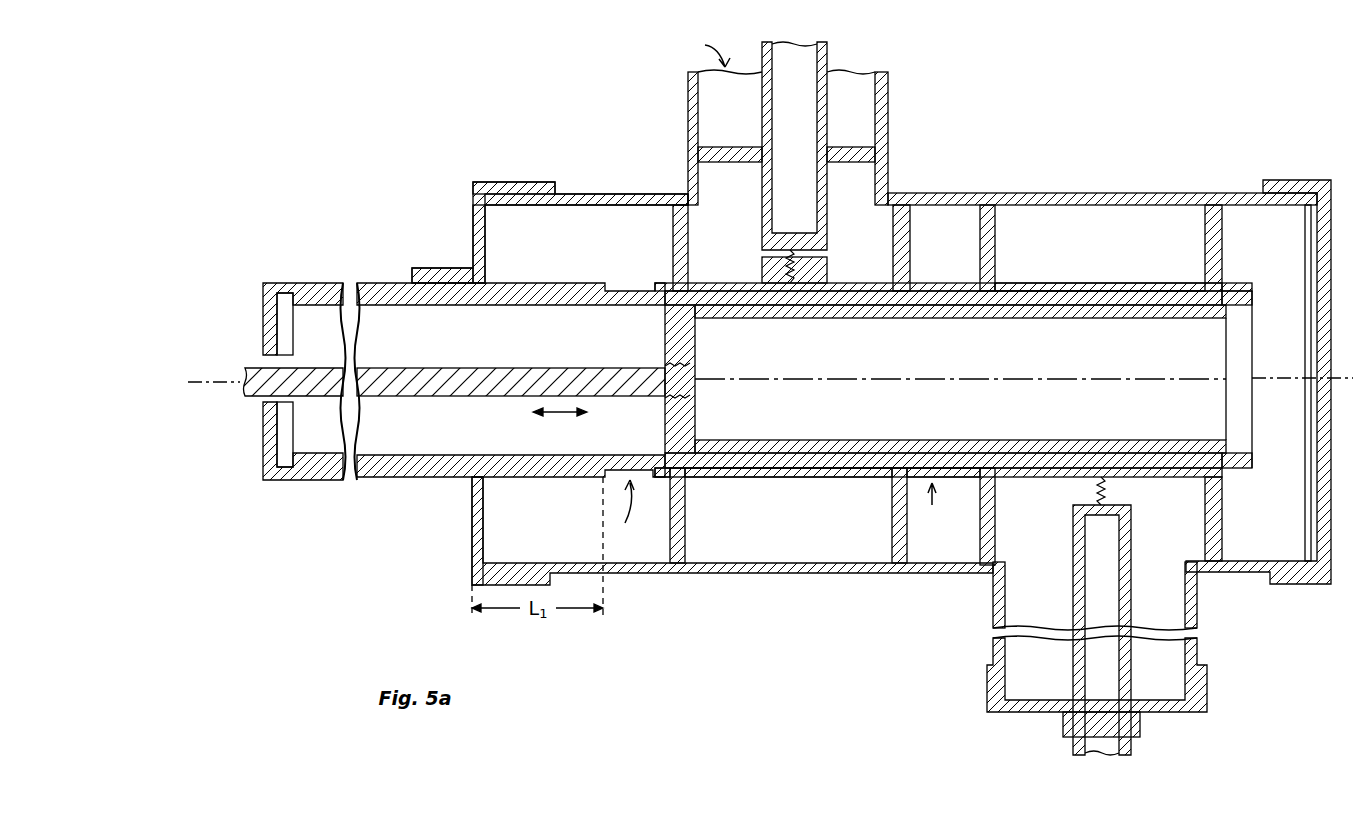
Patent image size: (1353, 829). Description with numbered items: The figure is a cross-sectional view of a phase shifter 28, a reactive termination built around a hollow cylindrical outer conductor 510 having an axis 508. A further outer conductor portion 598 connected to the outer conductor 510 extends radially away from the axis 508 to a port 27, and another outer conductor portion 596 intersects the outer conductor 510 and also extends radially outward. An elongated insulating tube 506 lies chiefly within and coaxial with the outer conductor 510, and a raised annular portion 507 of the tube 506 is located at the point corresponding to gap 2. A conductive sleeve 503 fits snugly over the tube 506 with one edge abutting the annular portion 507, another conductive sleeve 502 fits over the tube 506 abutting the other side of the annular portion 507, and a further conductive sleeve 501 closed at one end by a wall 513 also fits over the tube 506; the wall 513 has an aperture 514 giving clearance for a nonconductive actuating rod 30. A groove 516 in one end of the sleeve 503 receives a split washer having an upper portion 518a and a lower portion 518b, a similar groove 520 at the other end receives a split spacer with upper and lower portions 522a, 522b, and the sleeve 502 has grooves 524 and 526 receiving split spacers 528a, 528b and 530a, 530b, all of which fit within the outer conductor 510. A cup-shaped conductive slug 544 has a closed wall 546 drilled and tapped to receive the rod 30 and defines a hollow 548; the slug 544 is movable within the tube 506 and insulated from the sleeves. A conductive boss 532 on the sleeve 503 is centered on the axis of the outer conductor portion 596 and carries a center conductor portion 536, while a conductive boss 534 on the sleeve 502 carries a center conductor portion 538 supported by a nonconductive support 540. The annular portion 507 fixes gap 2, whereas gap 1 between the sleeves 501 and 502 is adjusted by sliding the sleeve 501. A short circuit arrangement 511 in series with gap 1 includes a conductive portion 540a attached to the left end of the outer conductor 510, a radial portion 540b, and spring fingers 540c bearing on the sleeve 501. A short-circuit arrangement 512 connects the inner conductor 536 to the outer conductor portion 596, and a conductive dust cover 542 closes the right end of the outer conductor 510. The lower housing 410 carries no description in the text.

The gap 1 is at (630, 505).
The gap 2 is at (937, 507).
The port 27 is at (706, 50).
The phase shifter 28 is at (608, 638).
The actuating rod 30 is at (503, 368).
The lower housing 410 is at (760, 575).
The conductive sleeve 501 is at (385, 283).
The conductive sleeve 502 is at (848, 284).
The conductive sleeve 503 is at (1152, 282).
The tube 506 is at (586, 305).
The raised annular portion 507 is at (943, 479).
The axis 508 is at (205, 382).
The outer conductor 510 is at (650, 194).
The short circuit arrangement 511 is at (473, 207).
The short-circuit arrangement 512 is at (1000, 712).
The wall 513 is at (263, 453).
The aperture 514 is at (262, 400).
The groove 516 is at (1226, 282).
The upper portion of washer 518a is at (1222, 237).
The lower portion of washer 518b is at (1222, 525).
The groove 520 is at (997, 283).
The upper portion of split spacer 522a is at (995, 218).
The lower portion of split spacer 522b is at (995, 522).
The groove 524 is at (892, 478).
The groove 526 is at (690, 479).
The split spacer 528a is at (910, 245).
The split spacer 528b is at (892, 537).
The split spacer 530a is at (688, 232).
The split spacer 530b is at (685, 529).
The conductive boss 532 is at (1091, 484).
The conductive boss 534 is at (833, 265).
The center conductor portion 536 is at (1073, 557).
The center conductor portion 538 is at (827, 58).
The support 540 is at (869, 147).
The conductive portion 540a is at (536, 182).
The conductive portion 540b is at (485, 240).
The conductive spring fingers 540c is at (444, 268).
The dust cover 542 is at (1302, 180).
The conductive slug 544 is at (976, 318).
The closed wall 546 is at (698, 337).
The hollow 548 is at (960, 355).
The outer conductor portion 596 is at (993, 600).
The outer conductor portion 598 is at (888, 121).